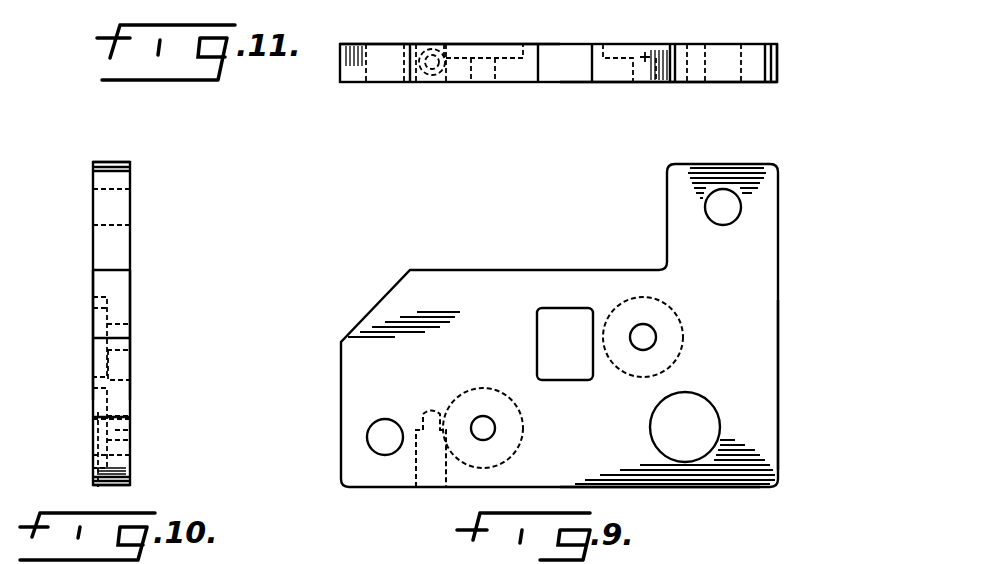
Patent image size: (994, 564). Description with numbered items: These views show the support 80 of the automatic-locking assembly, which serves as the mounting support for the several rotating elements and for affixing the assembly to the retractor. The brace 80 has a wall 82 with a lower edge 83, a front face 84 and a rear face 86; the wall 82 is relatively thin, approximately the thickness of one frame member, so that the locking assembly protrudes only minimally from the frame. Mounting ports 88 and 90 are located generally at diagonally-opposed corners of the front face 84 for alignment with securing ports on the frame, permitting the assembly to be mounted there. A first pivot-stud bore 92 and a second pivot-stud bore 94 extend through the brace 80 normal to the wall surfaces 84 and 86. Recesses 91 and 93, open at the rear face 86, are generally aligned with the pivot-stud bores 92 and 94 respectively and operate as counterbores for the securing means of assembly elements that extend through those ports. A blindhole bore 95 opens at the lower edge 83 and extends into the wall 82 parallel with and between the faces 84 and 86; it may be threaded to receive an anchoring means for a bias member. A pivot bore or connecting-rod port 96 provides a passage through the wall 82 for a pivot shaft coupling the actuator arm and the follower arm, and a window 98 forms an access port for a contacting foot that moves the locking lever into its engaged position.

In FIG. 9, the support 80 is at (787, 330).
In FIG. 11, the support 80 is at (763, 88).
In FIG. 10, the support 80 is at (153, 253).
In FIG. 11, the wall 82 is at (770, 60).
In FIG. 10, the wall 82 is at (113, 160).
In FIG. 9, the lower edge 83 is at (661, 488).
In FIG. 10, the lower edge 83 is at (107, 487).
In FIG. 9, the front face 84 is at (763, 445).
In FIG. 11, the front face 84 is at (582, 83).
In FIG. 10, the front face 84 is at (130, 287).
In FIG. 11, the rear face 86 is at (560, 23).
In FIG. 10, the rear face 86 is at (92, 280).
In FIG. 9, the mounting port 88 is at (713, 219).
In FIG. 11, the mounting port 88 is at (723, 72).
In FIG. 10, the mounting port 88 is at (135, 210).
In FIG. 9, the mounting port 90 is at (373, 443).
In FIG. 11, the mounting port 90 is at (372, 83).
In FIG. 10, the mounting port 90 is at (93, 427).
In FIG. 9, the recess 91 is at (527, 418).
In FIG. 11, the recess 91 is at (458, 42).
In FIG. 10, the recess 91 is at (95, 395).
In FIG. 9, the first pivot-stud bore 92 is at (482, 417).
In FIG. 11, the first pivot-stud bore 92 is at (478, 83).
In FIG. 10, the first pivot-stud bore 92 is at (132, 428).
In FIG. 9, the recess 93 is at (662, 302).
In FIG. 11, the recess 93 is at (615, 43).
In FIG. 10, the recess 93 is at (90, 310).
In FIG. 9, the second pivot-stud bore 94 is at (657, 338).
In FIG. 11, the second pivot-stud bore 94 is at (633, 83).
In FIG. 10, the second pivot-stud bore 94 is at (132, 325).
In FIG. 9, the blindhole bore 95 is at (430, 491).
In FIG. 11, the blindhole bore 95 is at (425, 83).
In FIG. 10, the blindhole bore 95 is at (120, 488).
In FIG. 9, the pivot bore 96 is at (698, 400).
In FIG. 9, the window 98 is at (540, 322).
In FIG. 11, the window 98 is at (543, 83).
In FIG. 10, the window 98 is at (122, 382).